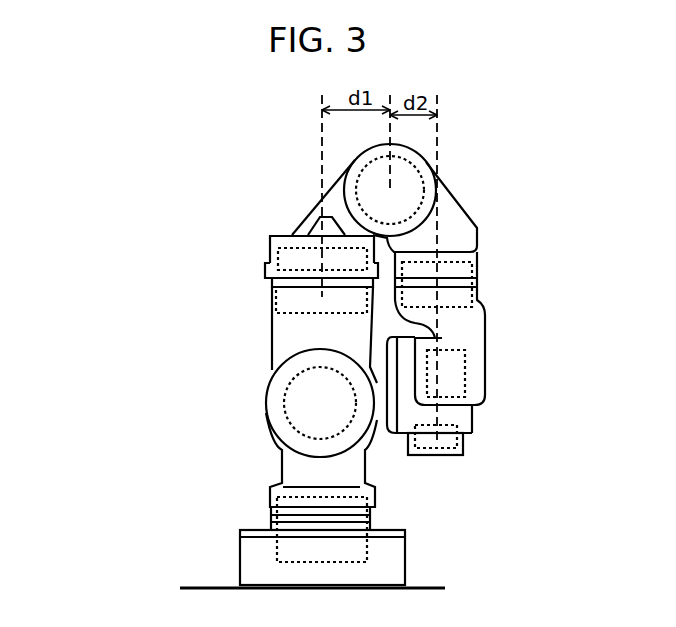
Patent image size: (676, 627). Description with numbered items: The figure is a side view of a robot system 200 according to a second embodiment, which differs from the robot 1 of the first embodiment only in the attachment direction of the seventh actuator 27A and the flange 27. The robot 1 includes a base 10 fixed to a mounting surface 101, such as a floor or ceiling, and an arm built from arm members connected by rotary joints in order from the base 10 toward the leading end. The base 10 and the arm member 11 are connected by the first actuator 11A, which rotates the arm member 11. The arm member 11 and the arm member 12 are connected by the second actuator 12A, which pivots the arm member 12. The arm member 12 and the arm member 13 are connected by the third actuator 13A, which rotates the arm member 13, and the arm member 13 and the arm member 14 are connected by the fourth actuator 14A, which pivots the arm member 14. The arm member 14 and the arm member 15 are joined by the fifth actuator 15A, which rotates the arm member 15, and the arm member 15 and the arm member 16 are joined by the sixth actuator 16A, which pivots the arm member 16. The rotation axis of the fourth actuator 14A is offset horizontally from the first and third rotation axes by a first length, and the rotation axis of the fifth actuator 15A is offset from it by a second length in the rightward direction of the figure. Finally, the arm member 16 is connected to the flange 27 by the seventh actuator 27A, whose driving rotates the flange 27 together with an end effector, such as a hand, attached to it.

The robot 1 is at (559, 442).
The base 10 is at (393, 563).
The mounting surface 101 is at (202, 588).
The arm member (first member) 11 is at (293, 460).
The first actuator 11A is at (273, 517).
The arm member (second member) 12 is at (273, 335).
The second actuator 12A is at (268, 400).
The arm member (third member) 13 is at (270, 236).
The third actuator 13A is at (267, 265).
The arm member (fourth member) 14 is at (458, 218).
The fourth actuator 14A is at (437, 152).
The arm member (fifth member) 15 is at (480, 335).
The fifth actuator 15A is at (477, 264).
The arm member (sixth member) 16 is at (475, 420).
The sixth actuator 16A is at (467, 352).
The flange 27 is at (425, 457).
The seventh actuator 27A is at (452, 457).
The robot system 200 is at (120, 408).